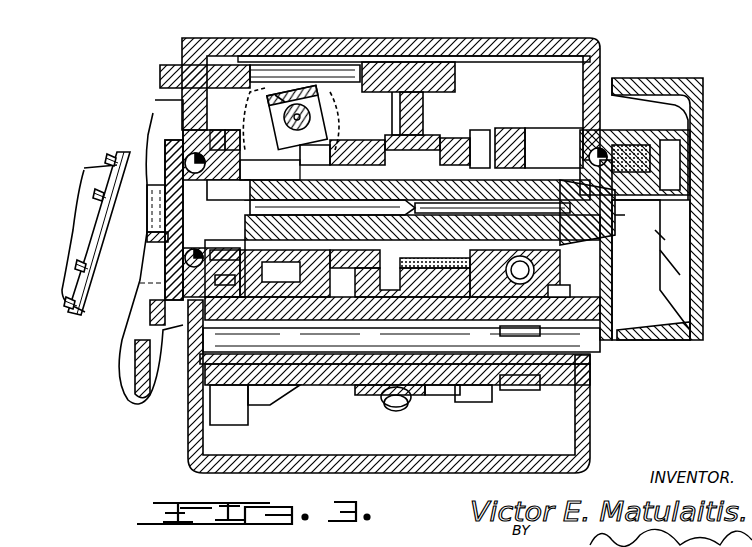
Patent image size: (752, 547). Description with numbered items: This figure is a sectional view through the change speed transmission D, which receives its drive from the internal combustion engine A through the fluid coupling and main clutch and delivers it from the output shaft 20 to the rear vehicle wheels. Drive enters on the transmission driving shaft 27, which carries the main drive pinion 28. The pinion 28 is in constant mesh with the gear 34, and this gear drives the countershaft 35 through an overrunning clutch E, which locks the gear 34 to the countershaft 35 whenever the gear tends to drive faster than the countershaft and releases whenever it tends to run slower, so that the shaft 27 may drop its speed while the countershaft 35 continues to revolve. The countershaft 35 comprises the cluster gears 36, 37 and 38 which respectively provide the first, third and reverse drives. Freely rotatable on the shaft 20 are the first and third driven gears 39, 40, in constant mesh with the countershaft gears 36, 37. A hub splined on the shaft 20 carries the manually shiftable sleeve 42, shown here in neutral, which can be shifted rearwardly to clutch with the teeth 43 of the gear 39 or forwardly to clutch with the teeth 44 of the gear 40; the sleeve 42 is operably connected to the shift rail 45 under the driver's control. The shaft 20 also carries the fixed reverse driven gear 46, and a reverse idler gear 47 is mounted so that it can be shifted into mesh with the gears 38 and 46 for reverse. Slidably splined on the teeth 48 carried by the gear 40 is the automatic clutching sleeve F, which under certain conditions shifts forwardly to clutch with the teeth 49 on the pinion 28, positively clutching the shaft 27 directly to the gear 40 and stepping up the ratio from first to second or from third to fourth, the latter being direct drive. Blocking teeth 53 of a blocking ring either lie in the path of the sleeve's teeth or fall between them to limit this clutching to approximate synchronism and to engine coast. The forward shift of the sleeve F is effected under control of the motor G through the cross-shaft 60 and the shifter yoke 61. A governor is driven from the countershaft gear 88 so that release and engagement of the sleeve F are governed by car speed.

The output shaft 20 is at (686, 170).
The transmission driving shaft 27 is at (160, 182).
The main drive pinion 28 is at (215, 160).
The gear 34 is at (232, 428).
The countershaft 35 is at (441, 372).
The cluster gear 36 is at (467, 390).
The cluster gear 37 is at (343, 410).
The cluster gear 38 is at (515, 375).
The first driven gear 39 is at (479, 132).
The third driven gear 40 is at (350, 142).
The manually shiftable sleeve 42 is at (425, 135).
The teeth 43 is at (448, 140).
The teeth 44 is at (366, 150).
The shift rail 45 is at (336, 52).
The reverse driven gear 46 is at (508, 130).
The reverse idler gear 47 is at (548, 300).
The teeth 48 is at (333, 140).
The teeth 49 is at (242, 165).
The blocking teeth 53 is at (236, 138).
The cross-shaft 60 is at (298, 112).
The shifter yoke 61 is at (280, 100).
The countershaft gear 88 is at (402, 300).
The internal combustion engine A is at (404, 177).
The speed ratio transmission D is at (323, 68).
The overrunning clutch E is at (270, 402).
The automatic clutching sleeve F is at (270, 100).
The motor G is at (84, 168).